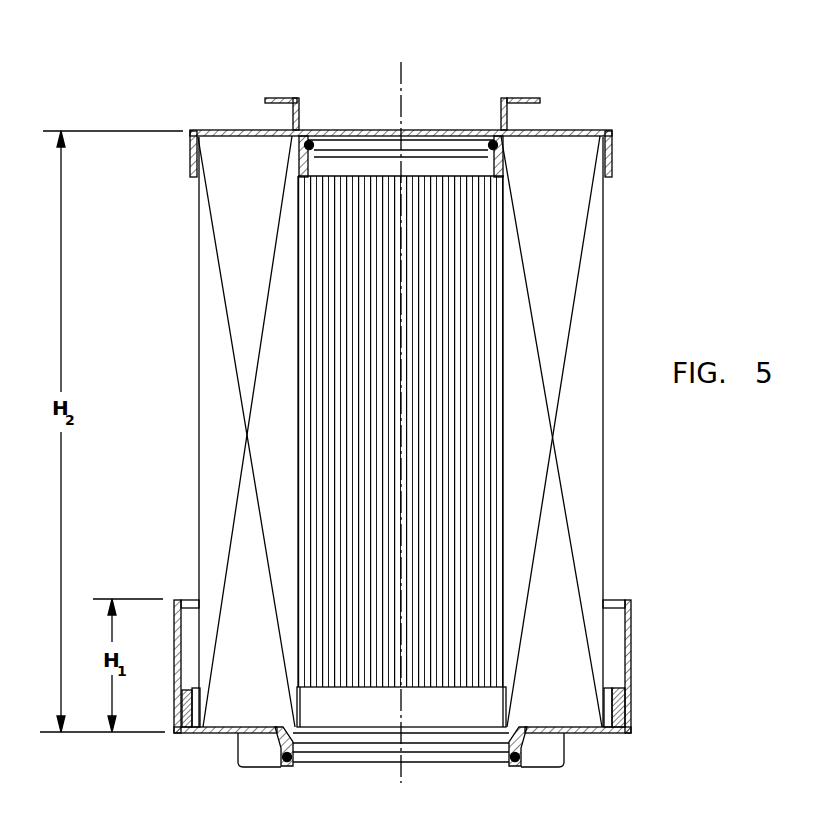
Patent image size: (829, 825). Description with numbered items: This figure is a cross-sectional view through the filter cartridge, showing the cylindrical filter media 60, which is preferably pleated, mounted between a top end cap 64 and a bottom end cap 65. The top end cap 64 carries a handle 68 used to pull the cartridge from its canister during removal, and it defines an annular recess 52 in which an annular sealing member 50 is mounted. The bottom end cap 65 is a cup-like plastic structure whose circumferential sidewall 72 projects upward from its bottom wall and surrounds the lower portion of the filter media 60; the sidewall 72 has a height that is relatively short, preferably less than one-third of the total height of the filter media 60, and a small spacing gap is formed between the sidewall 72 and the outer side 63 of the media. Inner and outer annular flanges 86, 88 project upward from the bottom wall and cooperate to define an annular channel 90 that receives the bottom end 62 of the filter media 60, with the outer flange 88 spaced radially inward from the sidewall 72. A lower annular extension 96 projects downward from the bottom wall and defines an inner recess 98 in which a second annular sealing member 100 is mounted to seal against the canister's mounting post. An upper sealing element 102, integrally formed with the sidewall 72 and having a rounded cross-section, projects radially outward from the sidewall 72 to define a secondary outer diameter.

The annular sealing member 50 is at (316, 142).
The annular recess 52 is at (308, 139).
The cylindrical filter media 60 is at (604, 287).
The bottom end 62 is at (553, 733).
The outer side 63 is at (200, 427).
The top end cap 64 is at (560, 130).
The bottom end cap 65 is at (634, 712).
The handle 68 is at (513, 98).
The circumferential sidewall 72 is at (631, 645).
The inner annular flange 86 is at (302, 710).
The outer annular flange 88 is at (195, 713).
The annular channel 90 is at (562, 727).
The lower annular extension 96 is at (517, 735).
The inner recess 98 is at (513, 762).
The annular sealing member 100 is at (508, 756).
The upper sealing element 102 is at (631, 602).